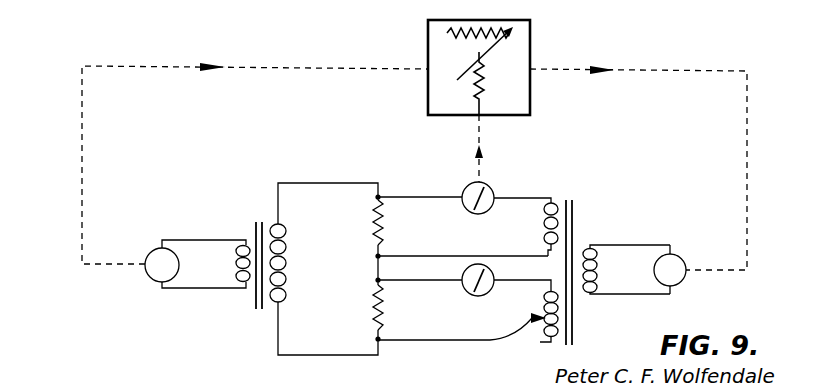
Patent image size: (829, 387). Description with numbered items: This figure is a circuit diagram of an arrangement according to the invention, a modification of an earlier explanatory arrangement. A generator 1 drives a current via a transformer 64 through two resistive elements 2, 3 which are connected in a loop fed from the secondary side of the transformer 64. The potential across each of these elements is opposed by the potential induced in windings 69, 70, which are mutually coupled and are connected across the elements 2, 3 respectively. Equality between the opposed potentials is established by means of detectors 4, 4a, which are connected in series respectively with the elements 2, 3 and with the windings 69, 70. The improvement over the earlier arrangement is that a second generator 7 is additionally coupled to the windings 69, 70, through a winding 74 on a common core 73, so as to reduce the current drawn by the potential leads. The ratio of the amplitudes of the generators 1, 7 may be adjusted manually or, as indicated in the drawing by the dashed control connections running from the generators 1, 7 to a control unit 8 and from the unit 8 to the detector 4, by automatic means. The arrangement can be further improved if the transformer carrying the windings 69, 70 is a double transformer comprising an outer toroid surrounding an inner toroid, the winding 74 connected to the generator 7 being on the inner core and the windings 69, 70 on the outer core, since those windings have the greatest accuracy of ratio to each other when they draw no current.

The generator 1 is at (152, 277).
The resistive element 2 is at (371, 216).
The resistive element 3 is at (371, 302).
The detector 4 is at (494, 184).
The detector 4a is at (463, 290).
The second generator 7 is at (683, 255).
The control unit 8 is at (530, 62).
The transformer 64 is at (251, 294).
The winding 69 is at (526, 227).
The winding 70 is at (544, 302).
The transformer core 73 is at (566, 352).
The winding 74 is at (592, 293).